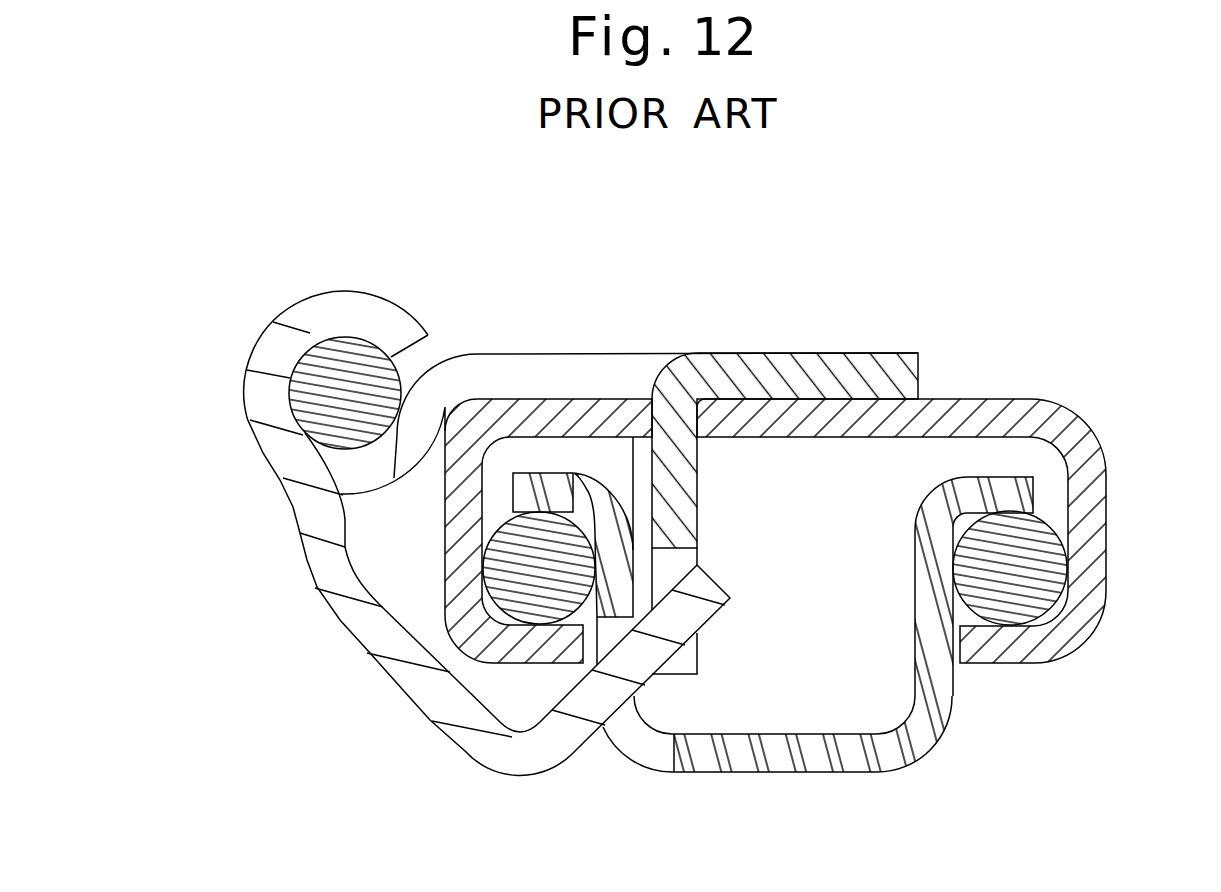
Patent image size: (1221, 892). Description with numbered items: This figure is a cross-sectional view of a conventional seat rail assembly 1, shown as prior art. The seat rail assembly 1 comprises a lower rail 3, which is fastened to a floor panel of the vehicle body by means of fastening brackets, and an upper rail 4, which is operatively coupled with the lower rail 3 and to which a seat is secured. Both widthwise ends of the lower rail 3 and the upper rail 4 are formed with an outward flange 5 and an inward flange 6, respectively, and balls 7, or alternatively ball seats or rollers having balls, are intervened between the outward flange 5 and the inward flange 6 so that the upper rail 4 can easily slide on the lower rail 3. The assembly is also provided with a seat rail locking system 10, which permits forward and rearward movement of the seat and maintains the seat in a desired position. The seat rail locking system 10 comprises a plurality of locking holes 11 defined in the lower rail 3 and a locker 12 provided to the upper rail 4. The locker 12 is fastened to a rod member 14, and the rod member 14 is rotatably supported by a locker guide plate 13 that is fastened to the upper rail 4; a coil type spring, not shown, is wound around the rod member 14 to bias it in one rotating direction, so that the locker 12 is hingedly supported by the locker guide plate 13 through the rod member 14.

The seat rail assembly 1 is at (795, 534).
The lower rail 3 is at (813, 752).
The upper rail 4 is at (1087, 484).
The outward flange 5 is at (542, 485).
The inward flange 6 is at (544, 645).
The ball 7 is at (483, 566).
The seat rail locking system 10 is at (570, 559).
The locking hole 11 is at (645, 748).
The locker 12 is at (487, 745).
The locker guide plate 13 is at (820, 367).
The rod member 14 is at (376, 332).